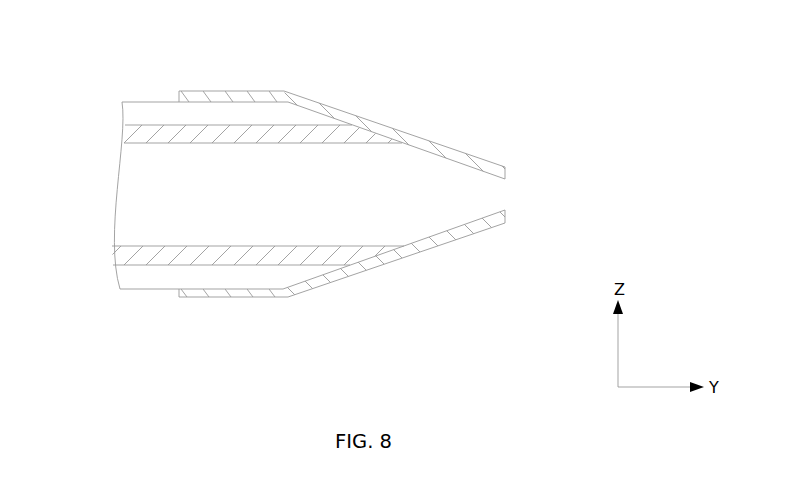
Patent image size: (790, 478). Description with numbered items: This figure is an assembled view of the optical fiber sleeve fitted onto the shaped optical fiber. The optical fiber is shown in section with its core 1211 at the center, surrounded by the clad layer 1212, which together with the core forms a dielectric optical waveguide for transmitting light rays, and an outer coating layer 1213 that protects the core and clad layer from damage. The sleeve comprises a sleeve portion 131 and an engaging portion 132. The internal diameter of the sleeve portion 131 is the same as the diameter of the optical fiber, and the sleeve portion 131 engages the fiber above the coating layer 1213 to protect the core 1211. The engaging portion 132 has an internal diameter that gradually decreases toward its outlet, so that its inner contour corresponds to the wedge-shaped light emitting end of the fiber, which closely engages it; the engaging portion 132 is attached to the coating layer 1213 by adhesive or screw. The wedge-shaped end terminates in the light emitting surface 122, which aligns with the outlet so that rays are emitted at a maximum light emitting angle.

The coating layer 1213 is at (152, 115).
The clad layer 1212 is at (143, 258).
The core 1211 is at (163, 208).
The sleeve portion 131 is at (227, 97).
The engaging portion 132 is at (393, 130).
The light emitting surface 122 is at (506, 198).